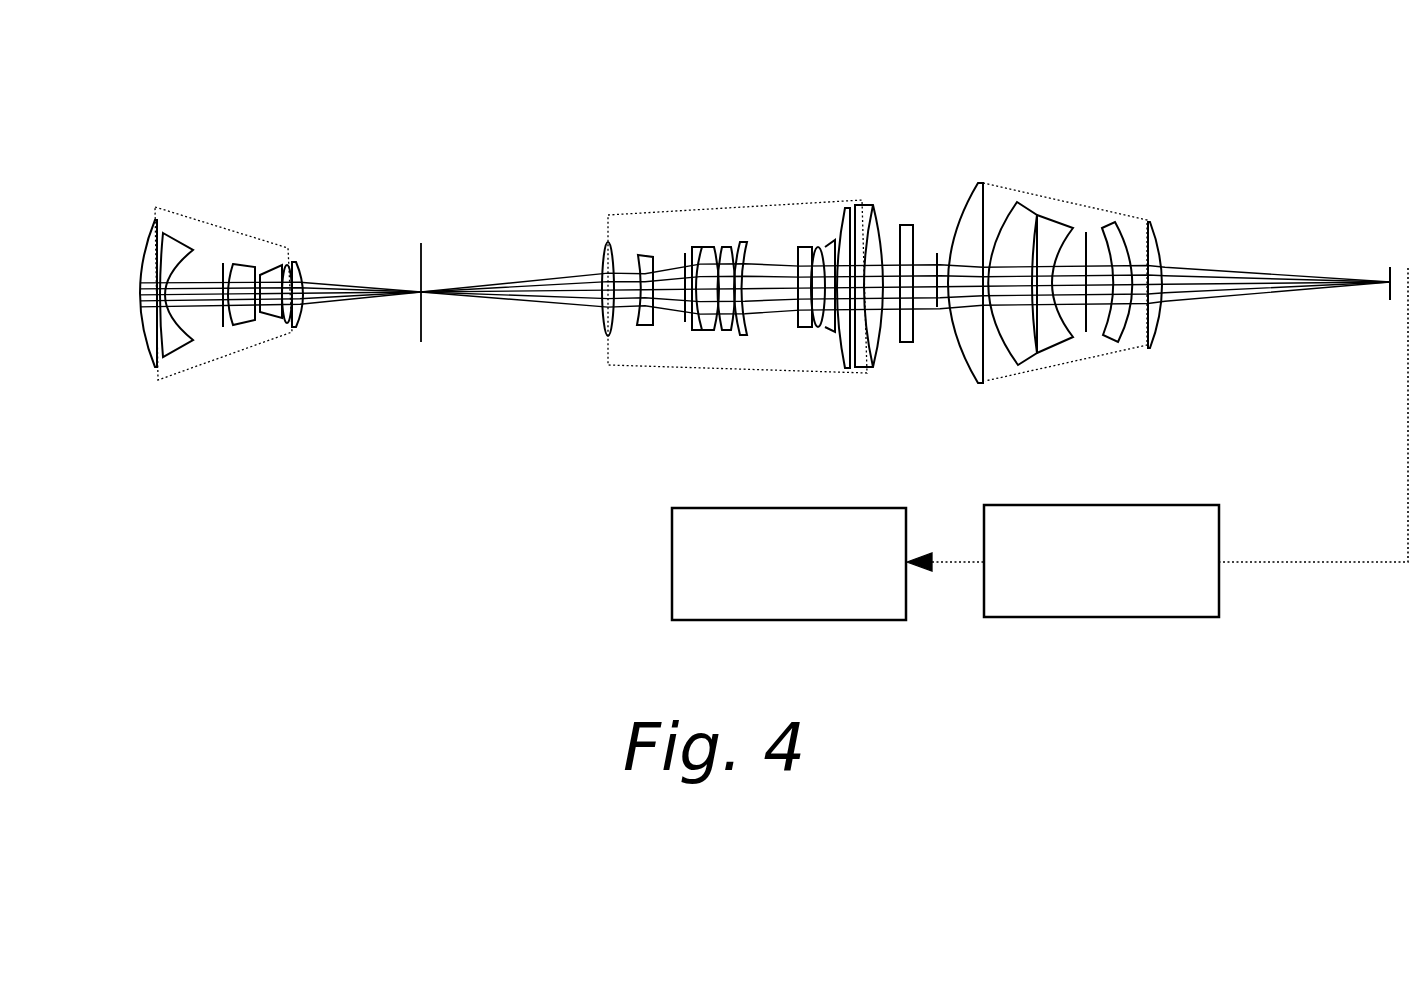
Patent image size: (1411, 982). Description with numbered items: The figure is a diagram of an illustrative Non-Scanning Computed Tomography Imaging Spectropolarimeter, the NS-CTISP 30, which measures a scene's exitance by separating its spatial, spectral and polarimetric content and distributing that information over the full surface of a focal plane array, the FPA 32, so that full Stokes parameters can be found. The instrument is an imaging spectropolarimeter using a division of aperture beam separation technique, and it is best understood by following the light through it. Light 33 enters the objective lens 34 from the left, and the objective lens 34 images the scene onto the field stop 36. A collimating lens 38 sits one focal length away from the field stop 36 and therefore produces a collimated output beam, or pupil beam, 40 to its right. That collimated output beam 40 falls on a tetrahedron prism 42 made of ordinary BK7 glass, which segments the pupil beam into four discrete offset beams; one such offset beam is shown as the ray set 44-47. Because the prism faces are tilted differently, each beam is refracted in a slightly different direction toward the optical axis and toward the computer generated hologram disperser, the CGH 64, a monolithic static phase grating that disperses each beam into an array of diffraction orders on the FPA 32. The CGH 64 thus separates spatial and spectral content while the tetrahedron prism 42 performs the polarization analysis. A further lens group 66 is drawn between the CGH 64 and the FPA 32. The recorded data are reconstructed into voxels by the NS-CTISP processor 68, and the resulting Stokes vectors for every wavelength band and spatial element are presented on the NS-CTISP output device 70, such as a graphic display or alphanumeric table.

The NS-CTISP 30 is at (540, 104).
The FPA 32 is at (1388, 289).
The light 33 is at (132, 296).
The objective lens 34 is at (242, 233).
The field stop 36 is at (423, 246).
The collimating lens 38 is at (657, 213).
The collimated output beam 40 is at (887, 230).
The tetrahedron prism 42 is at (915, 345).
The offset beams 44-47 is at (927, 322).
The CGH disperser 64 is at (933, 255).
The reimaging lens group 66 is at (1040, 210).
The NS-CTISP processor 68 is at (1108, 505).
The NS-CTISP output device 70 is at (767, 508).